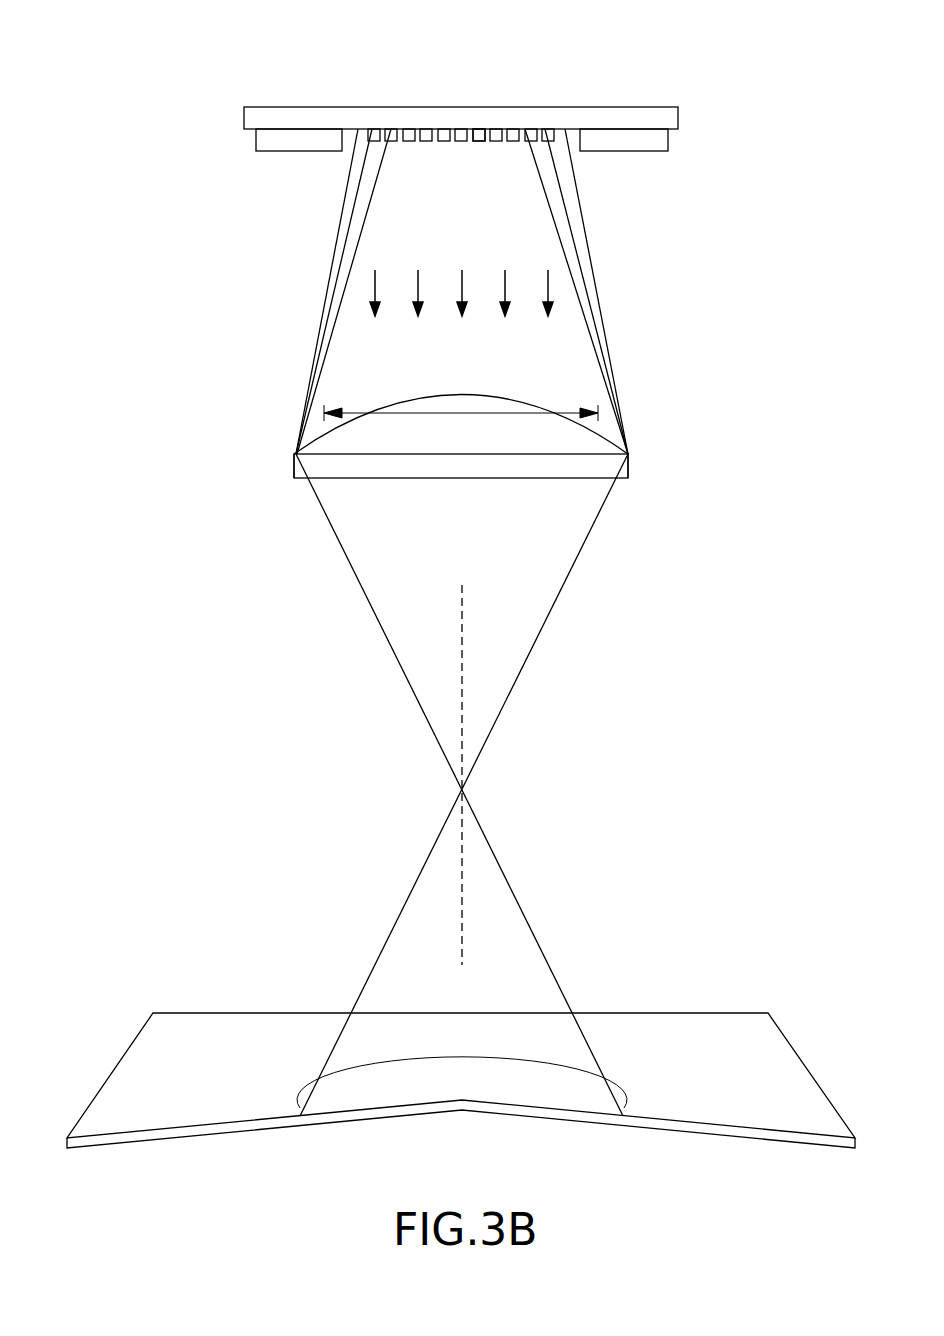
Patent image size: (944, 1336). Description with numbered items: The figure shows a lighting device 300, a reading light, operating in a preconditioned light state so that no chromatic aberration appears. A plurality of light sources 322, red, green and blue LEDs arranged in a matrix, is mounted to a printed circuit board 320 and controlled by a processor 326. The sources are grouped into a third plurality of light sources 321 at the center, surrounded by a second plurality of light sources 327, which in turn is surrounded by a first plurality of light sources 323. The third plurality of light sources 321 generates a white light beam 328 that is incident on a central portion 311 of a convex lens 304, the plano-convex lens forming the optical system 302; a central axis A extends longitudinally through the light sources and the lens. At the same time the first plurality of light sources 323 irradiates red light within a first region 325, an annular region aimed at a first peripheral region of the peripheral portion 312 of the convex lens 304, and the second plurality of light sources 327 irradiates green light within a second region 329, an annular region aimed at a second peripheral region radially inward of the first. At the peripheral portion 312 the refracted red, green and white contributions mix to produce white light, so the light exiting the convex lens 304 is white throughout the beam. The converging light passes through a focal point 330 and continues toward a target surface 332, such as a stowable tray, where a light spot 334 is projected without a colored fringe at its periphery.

The lighting device 300 is at (210, 92).
The printed circuit board 320 is at (598, 120).
The processor 326 is at (652, 142).
The plurality of light sources 322 is at (452, 158).
The third plurality of light sources 321 is at (470, 172).
The first plurality of light sources 323 is at (355, 162).
The second plurality of light sources 327 is at (377, 165).
The first region 325 is at (330, 295).
The second region 329 is at (337, 330).
The white light beam 328 is at (470, 250).
The convex lens 304 is at (513, 430).
The optical system 302 is at (473, 437).
The peripheral portion 312 is at (296, 462).
The central portion 311 is at (474, 418).
The focal point 330 is at (485, 776).
The central axis A is at (458, 602).
The target surface 332 is at (803, 1088).
The light spot 334 is at (487, 1078).